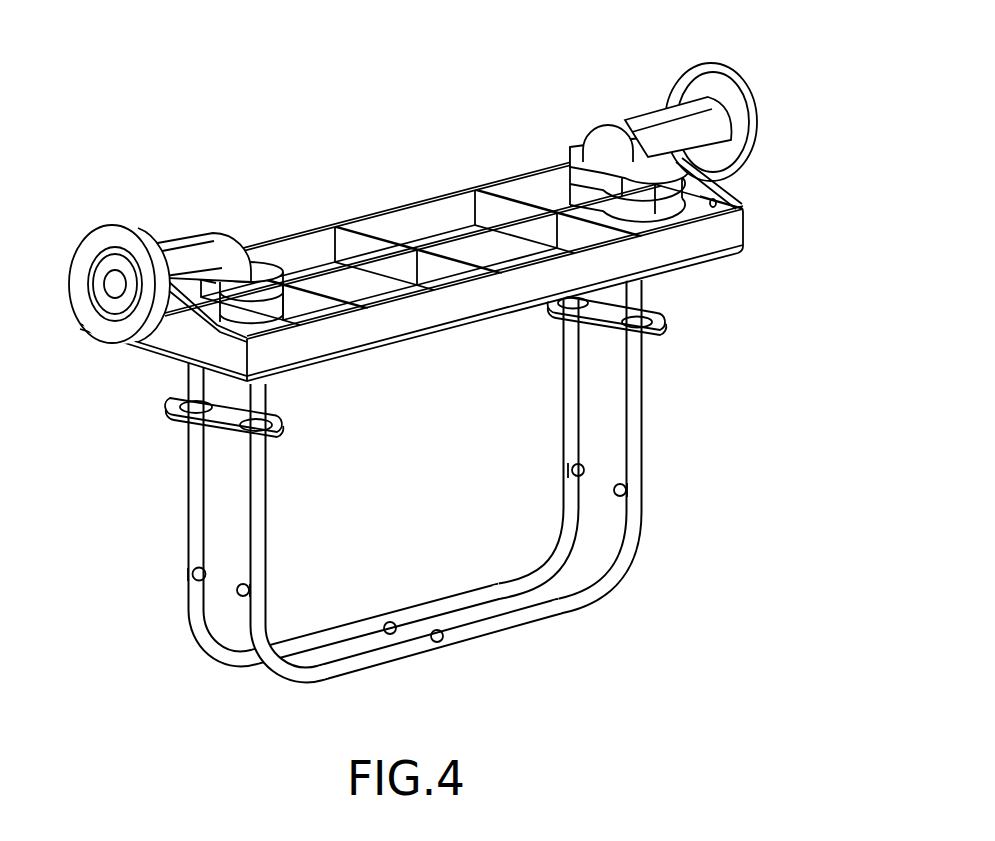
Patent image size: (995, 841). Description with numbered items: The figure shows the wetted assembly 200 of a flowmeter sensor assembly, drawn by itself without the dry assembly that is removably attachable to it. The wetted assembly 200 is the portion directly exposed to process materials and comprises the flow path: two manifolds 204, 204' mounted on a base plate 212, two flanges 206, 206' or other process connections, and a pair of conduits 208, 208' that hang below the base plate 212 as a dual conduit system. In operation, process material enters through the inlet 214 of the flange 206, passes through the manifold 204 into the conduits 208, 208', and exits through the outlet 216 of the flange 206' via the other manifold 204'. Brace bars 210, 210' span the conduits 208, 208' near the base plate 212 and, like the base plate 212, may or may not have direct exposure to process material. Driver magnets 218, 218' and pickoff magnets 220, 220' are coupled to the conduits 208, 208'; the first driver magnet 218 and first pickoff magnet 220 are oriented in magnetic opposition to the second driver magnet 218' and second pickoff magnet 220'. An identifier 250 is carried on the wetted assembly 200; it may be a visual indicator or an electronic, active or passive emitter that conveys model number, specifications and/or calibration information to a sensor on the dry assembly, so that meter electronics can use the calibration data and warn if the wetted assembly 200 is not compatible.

The wetted assembly 200 is at (362, 195).
The manifold 204 is at (240, 253).
The manifold 204' is at (616, 155).
The flange 206 is at (160, 251).
The flange 206' is at (691, 95).
The conduit 208 is at (268, 519).
The conduit 208' is at (562, 443).
The brace bar 210 is at (264, 419).
The brace bar 210' is at (646, 316).
The base plate 212 is at (434, 213).
The inlet 214 is at (111, 286).
The outlet 216 is at (772, 99).
The driver magnet 218 is at (440, 640).
The driver magnet 218' is at (377, 609).
The pickoff magnet 220 is at (431, 547).
The pickoff magnet 220' is at (350, 526).
The identifier 250 is at (745, 216).